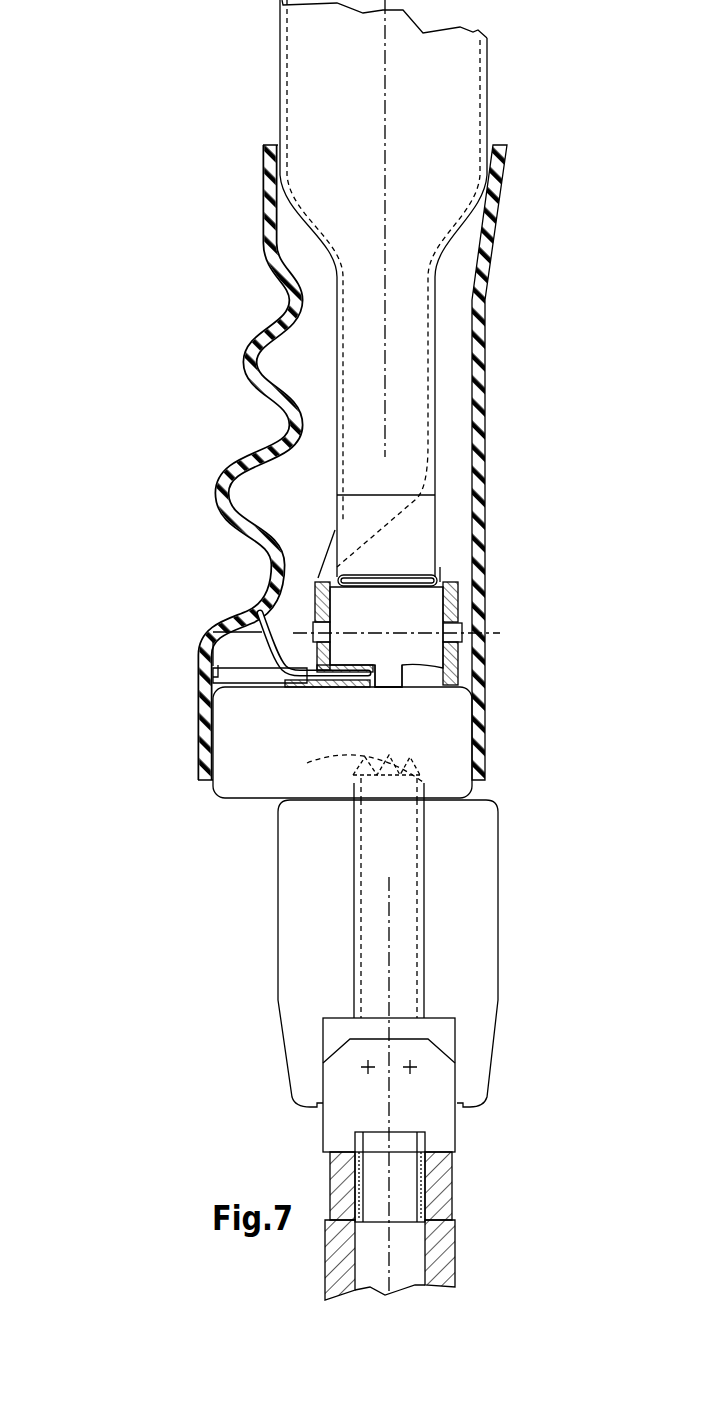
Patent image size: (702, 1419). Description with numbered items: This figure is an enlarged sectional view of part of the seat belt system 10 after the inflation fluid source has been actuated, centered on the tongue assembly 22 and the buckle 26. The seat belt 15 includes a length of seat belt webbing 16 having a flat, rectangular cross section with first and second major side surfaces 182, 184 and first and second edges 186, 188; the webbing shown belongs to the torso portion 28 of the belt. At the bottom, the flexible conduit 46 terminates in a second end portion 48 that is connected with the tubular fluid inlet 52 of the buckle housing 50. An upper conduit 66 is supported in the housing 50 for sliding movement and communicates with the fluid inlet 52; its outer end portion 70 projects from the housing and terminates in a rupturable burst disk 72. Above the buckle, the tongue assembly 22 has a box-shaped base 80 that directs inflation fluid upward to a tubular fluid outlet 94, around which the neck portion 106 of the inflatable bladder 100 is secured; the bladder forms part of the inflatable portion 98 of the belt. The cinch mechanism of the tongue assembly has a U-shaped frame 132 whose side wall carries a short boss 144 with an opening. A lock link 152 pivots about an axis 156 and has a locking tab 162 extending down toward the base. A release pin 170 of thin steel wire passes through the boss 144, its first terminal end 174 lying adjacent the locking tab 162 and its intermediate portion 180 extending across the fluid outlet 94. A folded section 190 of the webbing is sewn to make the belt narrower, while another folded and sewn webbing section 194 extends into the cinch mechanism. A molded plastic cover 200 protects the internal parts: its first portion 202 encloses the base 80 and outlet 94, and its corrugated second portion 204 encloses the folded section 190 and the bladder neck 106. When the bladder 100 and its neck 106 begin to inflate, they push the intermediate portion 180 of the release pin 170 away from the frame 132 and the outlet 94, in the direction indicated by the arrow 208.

The seat belt system 10 is at (217, 992).
The seat belt 15 is at (493, 32).
The seat belt webbing 16 is at (492, 62).
The tongue assembly 22 is at (520, 288).
The buckle 26 is at (493, 1020).
The torso portion 28 is at (278, 10).
The flexible conduit 46 is at (455, 1243).
The second end portion 48 is at (452, 1187).
The housing 50 is at (457, 1123).
The fluid inlet 52 is at (400, 1172).
The upper conduit 66 is at (425, 968).
The outer end portion 70 is at (423, 780).
The burst disk 72 is at (320, 762).
The base 80 is at (247, 798).
The fluid outlet 94 is at (230, 673).
The inflatable portion 98 is at (257, 42).
The inflatable bladder 100 is at (337, 400).
The neck portion 106 is at (323, 538).
The frame 132 is at (270, 570).
The boss 144 is at (343, 690).
The lock link 152 is at (413, 645).
The axis 156 is at (488, 658).
The locking tab 162 is at (455, 680).
The release pin 170 is at (258, 642).
The first terminal end 174 is at (367, 687).
The intermediate portion 180 is at (238, 610).
The first major side surface 182 is at (418, 525).
The second major side surface 184 is at (417, 590).
The first edge 186 is at (280, 83).
The second edge 188 is at (487, 97).
The folded section 190 is at (435, 392).
The webbing section 194 is at (440, 563).
The cover 200 is at (262, 207).
The first portion 202 is at (197, 768).
The second portion 204 is at (487, 420).
The arrow 208 is at (120, 634).